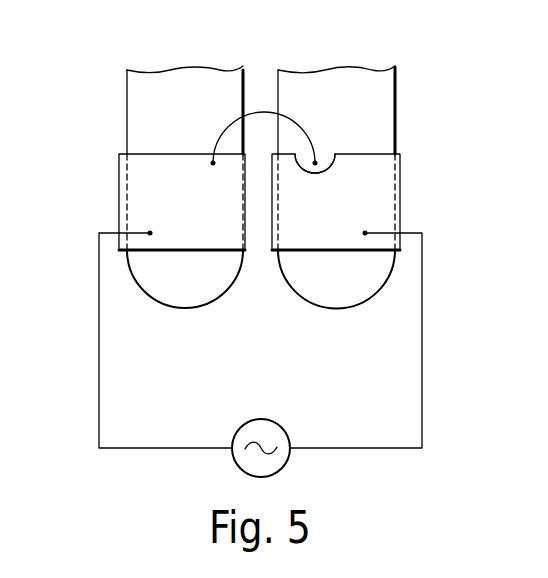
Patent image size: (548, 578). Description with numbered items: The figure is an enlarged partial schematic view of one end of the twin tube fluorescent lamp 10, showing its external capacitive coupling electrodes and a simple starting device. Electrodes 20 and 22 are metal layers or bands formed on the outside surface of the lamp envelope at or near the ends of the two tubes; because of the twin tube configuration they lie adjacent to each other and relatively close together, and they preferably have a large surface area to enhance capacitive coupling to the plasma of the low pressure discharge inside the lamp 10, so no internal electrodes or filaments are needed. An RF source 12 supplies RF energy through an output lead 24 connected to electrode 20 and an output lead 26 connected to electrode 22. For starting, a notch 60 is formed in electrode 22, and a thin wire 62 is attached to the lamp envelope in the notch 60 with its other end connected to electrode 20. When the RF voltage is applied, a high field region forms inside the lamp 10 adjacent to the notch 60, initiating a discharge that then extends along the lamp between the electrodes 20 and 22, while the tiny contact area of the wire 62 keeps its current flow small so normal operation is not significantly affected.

The fluorescent lamp tube 10 is at (127, 122).
The RF source 12 is at (288, 460).
The capacitive coupling electrode 20 is at (140, 190).
The capacitive coupling electrode 22 is at (385, 178).
The output lead 24 is at (99, 326).
The output lead 26 is at (422, 325).
The notch 60 is at (327, 160).
The thin wire 62 is at (273, 110).